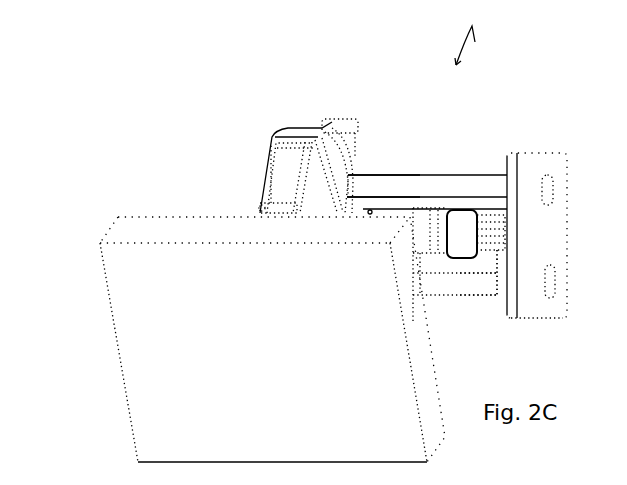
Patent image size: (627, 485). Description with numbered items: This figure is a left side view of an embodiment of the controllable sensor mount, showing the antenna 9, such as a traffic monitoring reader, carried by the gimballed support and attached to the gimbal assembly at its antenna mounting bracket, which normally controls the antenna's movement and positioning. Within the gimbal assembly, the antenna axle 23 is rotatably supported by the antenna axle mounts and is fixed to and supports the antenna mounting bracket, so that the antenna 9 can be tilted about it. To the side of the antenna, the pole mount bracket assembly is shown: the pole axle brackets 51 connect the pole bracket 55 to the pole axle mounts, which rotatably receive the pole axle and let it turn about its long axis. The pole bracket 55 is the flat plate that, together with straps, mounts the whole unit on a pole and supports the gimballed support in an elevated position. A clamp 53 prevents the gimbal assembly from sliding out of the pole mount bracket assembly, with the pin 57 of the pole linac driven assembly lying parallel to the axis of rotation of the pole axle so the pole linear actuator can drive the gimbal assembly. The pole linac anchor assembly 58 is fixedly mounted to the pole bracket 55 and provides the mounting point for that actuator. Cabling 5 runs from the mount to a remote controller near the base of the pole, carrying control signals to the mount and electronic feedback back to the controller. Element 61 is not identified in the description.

The antenna 9 is at (140, 223).
The cabling 5 is at (383, 175).
The antenna axle 23 is at (347, 153).
The pole axle brackets 51 is at (363, 173).
The clamp 53 is at (427, 202).
The pole bracket 55 is at (553, 162).
The pin 57 is at (495, 262).
The pole linac anchor assembly 58 is at (507, 222).
The bracket 61 is at (450, 292).